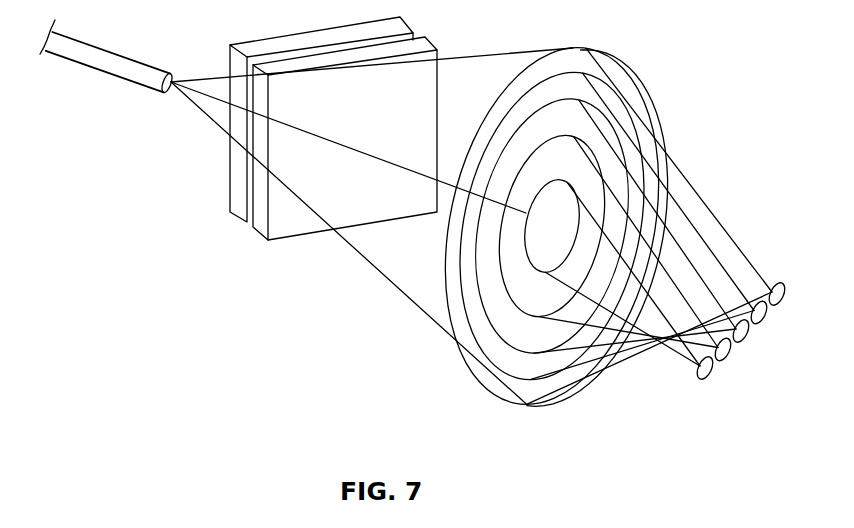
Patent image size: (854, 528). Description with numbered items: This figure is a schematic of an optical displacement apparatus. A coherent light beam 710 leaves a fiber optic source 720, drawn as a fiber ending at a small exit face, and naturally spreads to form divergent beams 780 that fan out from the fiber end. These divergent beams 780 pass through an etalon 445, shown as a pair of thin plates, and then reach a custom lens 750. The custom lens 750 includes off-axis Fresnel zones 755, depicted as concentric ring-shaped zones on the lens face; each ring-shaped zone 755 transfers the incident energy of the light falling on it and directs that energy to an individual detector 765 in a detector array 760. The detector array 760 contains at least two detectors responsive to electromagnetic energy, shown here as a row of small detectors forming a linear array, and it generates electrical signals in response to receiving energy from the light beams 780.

The fiber optic source 720 is at (97, 70).
The coherent light beam 710 is at (173, 91).
The divergent beams 780 is at (222, 133).
The etalon 445 is at (262, 238).
The custom lens 750 is at (485, 385).
The off-axis Fresnel zones 755 is at (464, 328).
The detector array 760 is at (723, 349).
The detector 765 is at (700, 383).